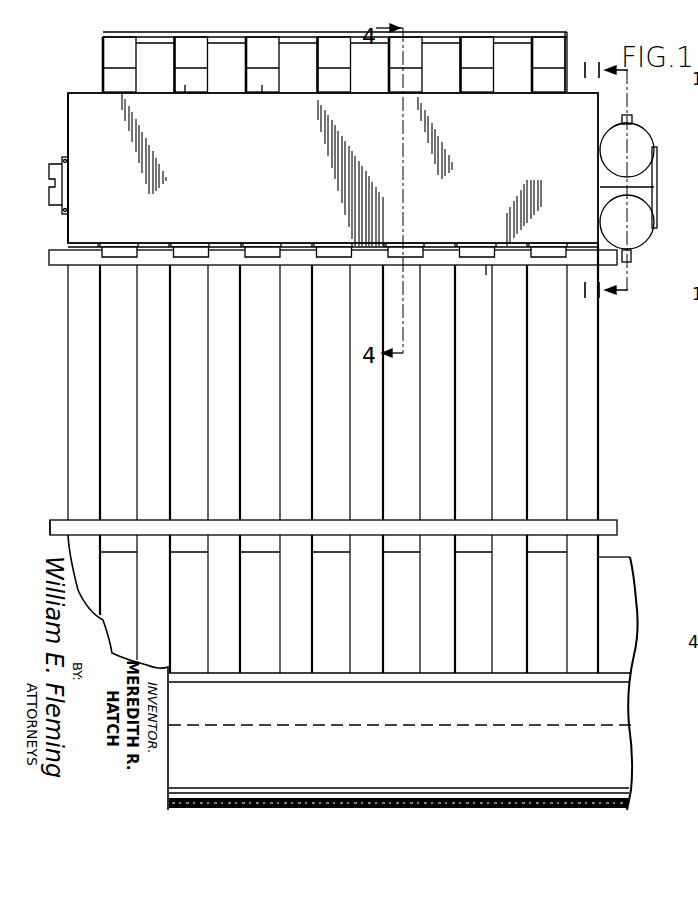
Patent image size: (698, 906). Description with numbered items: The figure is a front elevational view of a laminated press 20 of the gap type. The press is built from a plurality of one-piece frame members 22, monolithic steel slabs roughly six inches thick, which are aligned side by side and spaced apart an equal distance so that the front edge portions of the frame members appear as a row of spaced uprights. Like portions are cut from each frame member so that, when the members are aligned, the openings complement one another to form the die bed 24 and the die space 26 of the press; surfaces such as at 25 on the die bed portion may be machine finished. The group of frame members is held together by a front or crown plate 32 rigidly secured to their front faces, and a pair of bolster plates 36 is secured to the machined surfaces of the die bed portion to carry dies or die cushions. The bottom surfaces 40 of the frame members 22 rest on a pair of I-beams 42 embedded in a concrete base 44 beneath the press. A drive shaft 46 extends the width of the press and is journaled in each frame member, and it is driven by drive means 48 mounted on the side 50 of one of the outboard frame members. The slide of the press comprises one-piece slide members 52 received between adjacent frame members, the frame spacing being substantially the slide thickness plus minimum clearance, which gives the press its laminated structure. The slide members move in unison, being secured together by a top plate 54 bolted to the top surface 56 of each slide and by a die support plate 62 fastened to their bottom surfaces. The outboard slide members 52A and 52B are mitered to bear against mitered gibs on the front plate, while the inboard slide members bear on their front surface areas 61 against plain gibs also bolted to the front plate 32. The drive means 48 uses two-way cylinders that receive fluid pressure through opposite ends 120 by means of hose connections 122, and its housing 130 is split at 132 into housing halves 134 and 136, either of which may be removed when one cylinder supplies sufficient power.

The laminated press 20 is at (333, 169).
The frame members 22 is at (82, 428).
The die bed 24 is at (590, 553).
The machine finished surfaces 25 is at (600, 520).
The die space 26 is at (347, 458).
The front or crown plate 32 is at (80, 117).
The bolster plates 36 is at (83, 522).
The bottom surfaces 40 is at (585, 678).
The I-beams 42 is at (620, 700).
The concrete base 44 is at (628, 598).
The drive shaft 46 is at (57, 208).
The drive means 48 is at (613, 186).
The side of outboard frame member 50 is at (600, 320).
The slide members 52 is at (183, 60).
The outboard slide member 52A is at (106, 71).
The outboard slide member 52B is at (546, 80).
The top plate 54 is at (103, 34).
The top surface 56 is at (560, 44).
The front surface areas 61 is at (262, 85).
The die support plate 62 is at (487, 266).
The opposite ends of cylinders 120 is at (673, 187).
The hose connections 122 is at (630, 118).
The housing 130 is at (600, 147).
The split 132 is at (608, 186).
The housing half 134 is at (600, 226).
The housing half 136 is at (606, 131).